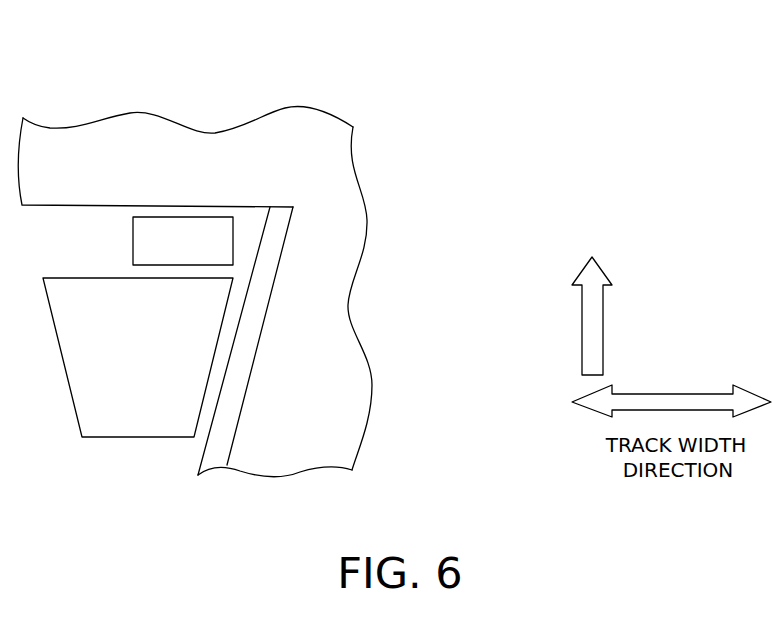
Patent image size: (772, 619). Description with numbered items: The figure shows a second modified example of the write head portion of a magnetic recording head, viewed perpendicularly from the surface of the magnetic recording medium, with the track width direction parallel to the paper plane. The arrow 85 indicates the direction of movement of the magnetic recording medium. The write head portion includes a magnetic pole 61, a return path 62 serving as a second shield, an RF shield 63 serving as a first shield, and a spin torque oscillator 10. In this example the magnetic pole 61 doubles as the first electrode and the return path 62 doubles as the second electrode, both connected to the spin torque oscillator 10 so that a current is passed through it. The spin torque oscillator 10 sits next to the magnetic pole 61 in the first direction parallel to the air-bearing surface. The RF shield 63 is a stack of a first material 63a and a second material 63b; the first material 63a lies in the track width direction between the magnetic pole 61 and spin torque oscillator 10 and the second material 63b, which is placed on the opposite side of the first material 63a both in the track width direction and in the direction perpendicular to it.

The spin torque oscillator 10 is at (165, 238).
The magnetic pole 61 is at (125, 397).
The return path 62 is at (280, 168).
The RF shield 63 is at (373, 341).
The first material 63a is at (263, 283).
The second material 63b is at (280, 362).
The arrow 85 is at (592, 257).